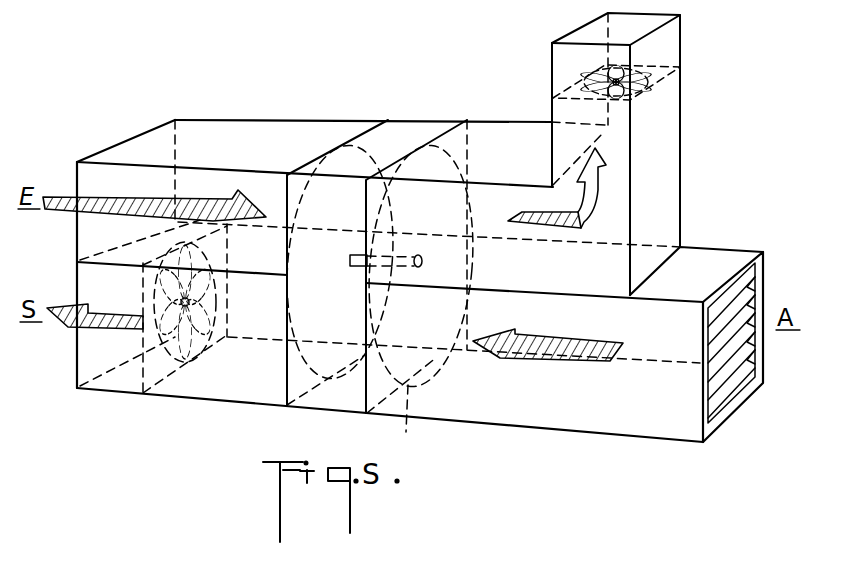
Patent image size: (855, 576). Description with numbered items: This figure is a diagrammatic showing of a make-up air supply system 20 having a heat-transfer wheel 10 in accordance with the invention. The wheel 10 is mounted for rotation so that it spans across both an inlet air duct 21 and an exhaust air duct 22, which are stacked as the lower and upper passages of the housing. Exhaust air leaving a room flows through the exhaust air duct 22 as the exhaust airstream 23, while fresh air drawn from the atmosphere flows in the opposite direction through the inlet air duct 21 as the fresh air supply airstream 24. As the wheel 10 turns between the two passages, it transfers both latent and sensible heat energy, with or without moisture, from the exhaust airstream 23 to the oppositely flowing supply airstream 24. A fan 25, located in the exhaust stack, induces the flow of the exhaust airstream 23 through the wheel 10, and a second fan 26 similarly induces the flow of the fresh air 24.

The wheel 10 is at (379, 299).
The make-up air supply system 20 is at (184, 409).
The inlet air duct 21 is at (491, 408).
The exhaust air duct 22 is at (302, 128).
The exhaust airstream 23 is at (194, 206).
The fresh air supply airstream 24 is at (572, 362).
The fan 25 is at (682, 66).
The fan 26 is at (141, 391).